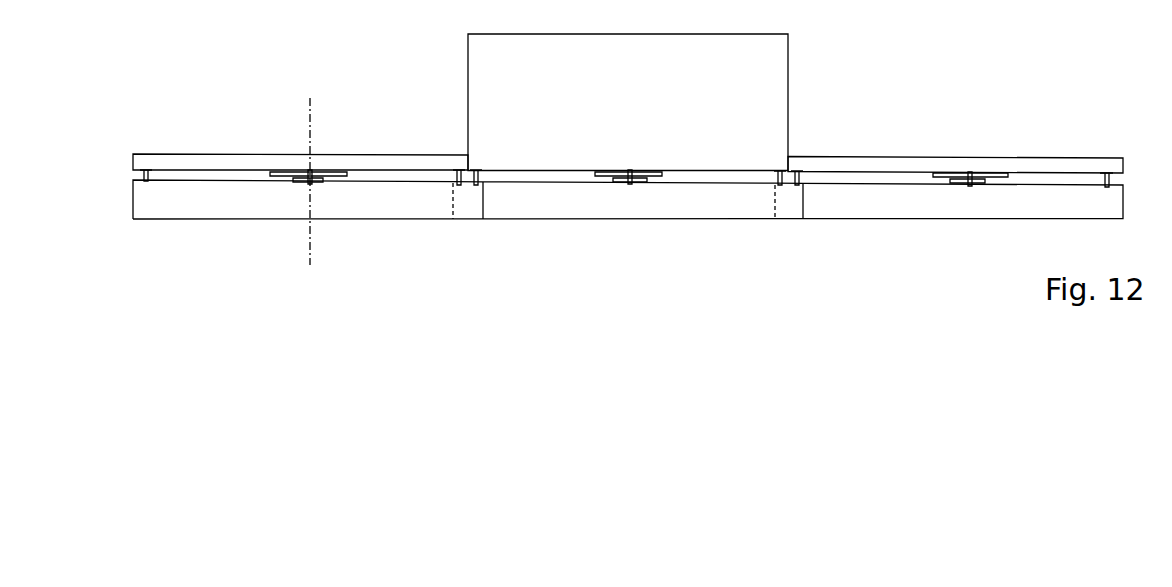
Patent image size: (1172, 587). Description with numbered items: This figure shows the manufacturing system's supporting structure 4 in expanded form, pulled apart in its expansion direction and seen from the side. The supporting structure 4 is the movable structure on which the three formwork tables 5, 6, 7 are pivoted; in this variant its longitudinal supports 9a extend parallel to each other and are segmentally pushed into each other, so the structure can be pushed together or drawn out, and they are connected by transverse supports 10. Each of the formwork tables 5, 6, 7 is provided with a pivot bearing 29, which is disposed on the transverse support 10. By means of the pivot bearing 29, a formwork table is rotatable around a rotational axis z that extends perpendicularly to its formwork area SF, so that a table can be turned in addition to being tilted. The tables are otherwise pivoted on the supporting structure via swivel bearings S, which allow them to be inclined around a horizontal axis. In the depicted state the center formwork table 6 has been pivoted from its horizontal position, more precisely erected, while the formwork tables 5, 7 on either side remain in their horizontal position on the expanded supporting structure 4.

The supporting structure 4 is at (570, 227).
The formwork table 5 is at (1011, 148).
The formwork table 6 is at (793, 88).
The formwork table 7 is at (210, 150).
The longitudinal support 9a is at (385, 207).
The transverse support 10 is at (456, 178).
The pivot bearing 29 is at (298, 186).
The swivel bearing S is at (138, 172).
The formwork area SF is at (643, 111).
The rotational axis z is at (310, 178).